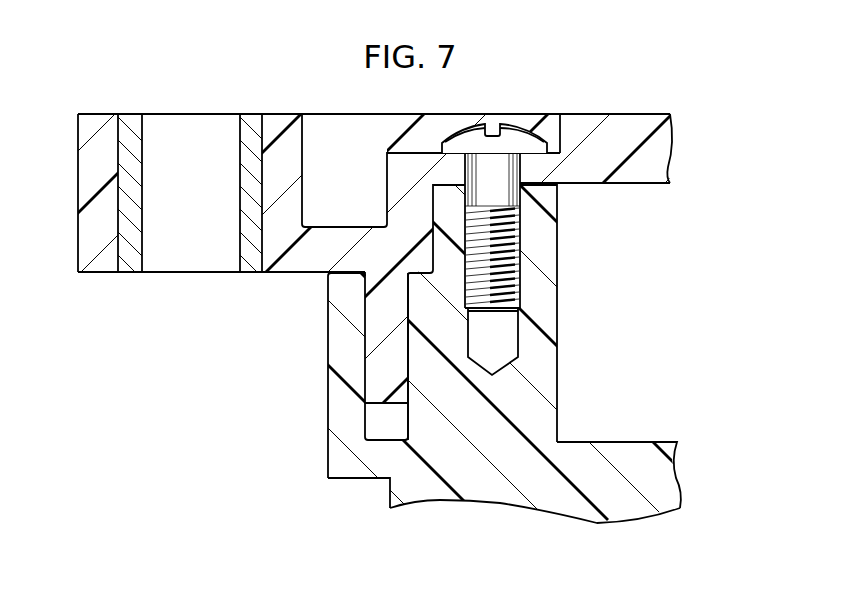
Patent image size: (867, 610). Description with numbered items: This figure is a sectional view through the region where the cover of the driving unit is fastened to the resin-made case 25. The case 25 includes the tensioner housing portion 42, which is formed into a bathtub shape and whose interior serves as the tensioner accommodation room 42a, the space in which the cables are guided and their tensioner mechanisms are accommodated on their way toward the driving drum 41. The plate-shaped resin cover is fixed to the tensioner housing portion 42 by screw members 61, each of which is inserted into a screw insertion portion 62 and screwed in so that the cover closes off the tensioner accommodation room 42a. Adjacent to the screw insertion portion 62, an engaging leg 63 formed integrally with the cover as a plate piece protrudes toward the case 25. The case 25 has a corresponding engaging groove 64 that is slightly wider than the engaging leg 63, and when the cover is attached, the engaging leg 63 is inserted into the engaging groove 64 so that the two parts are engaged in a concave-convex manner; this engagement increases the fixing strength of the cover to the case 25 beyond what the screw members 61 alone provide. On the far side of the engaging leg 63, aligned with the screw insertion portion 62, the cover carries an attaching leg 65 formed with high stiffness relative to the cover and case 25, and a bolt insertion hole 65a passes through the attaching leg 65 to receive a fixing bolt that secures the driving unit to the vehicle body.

The case 25 is at (432, 515).
The driving drum 41 is at (630, 102).
The tensioner housing portion 42 is at (378, 504).
The tensioner accommodation room 42a is at (645, 362).
The screw member 61 is at (467, 138).
The screw insertion portion 62 is at (540, 286).
The engaging leg 63 is at (383, 344).
The engaging groove 64 is at (383, 423).
The attaching leg 65 is at (97, 288).
The bolt insertion hole 65a is at (188, 127).